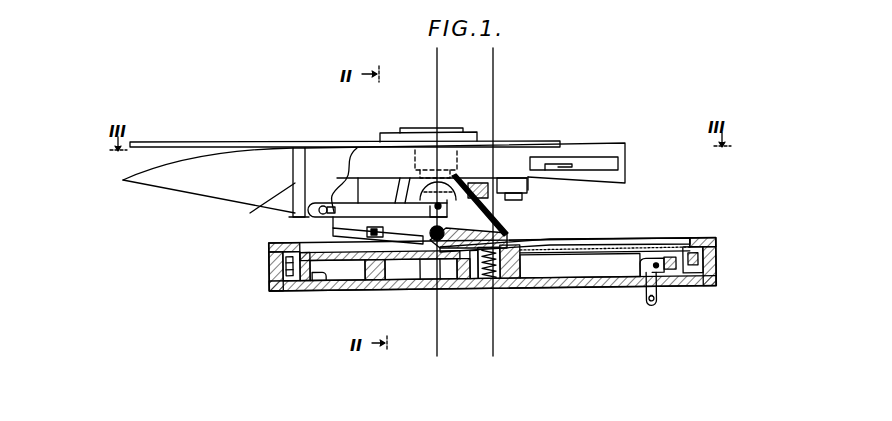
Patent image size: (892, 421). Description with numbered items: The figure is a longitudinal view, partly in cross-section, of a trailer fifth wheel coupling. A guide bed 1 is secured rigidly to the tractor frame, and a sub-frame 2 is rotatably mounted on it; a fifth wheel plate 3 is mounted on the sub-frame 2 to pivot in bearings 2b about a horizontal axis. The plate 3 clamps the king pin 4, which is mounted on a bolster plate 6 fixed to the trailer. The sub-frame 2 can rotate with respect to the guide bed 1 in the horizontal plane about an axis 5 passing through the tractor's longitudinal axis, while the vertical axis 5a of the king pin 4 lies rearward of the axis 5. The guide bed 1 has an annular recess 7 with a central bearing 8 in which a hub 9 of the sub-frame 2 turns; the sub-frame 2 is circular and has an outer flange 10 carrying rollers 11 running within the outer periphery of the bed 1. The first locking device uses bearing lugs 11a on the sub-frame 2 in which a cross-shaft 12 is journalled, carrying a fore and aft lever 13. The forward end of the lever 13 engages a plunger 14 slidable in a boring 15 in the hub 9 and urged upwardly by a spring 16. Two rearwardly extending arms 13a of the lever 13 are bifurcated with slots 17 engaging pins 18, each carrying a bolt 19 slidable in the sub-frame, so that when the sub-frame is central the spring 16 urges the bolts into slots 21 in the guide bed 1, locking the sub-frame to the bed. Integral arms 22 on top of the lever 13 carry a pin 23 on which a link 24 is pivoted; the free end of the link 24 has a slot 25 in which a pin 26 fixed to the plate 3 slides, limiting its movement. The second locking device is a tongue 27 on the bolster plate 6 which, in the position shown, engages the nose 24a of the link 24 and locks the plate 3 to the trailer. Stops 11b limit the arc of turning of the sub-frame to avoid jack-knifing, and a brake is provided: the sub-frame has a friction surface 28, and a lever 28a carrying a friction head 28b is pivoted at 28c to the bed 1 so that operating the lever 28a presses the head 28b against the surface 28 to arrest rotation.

The guide bed 1 is at (710, 288).
The sub-frame 2 is at (470, 178).
The bearings 2b is at (501, 233).
The fifth wheel plate 3 is at (180, 194).
The king pin 4 is at (440, 171).
The axis 5 is at (499, 350).
The vertical axis of the king pin 5a is at (443, 350).
The bolster plate 6 is at (205, 143).
The annular recess 7 is at (306, 289).
The central bearing 8 is at (527, 284).
The hub 9 is at (473, 288).
The outer flange 10 is at (316, 286).
The rollers 11 is at (698, 284).
The bearing lugs 11a is at (428, 288).
The stops 11b is at (701, 232).
The cross-shaft 12 is at (441, 263).
The fore and aft lever 13 is at (446, 232).
The rearwardly extending arms 13a is at (377, 211).
The plunger 14 is at (492, 289).
The boring 15 is at (540, 243).
The spring 16 is at (580, 267).
The slots 17 is at (368, 232).
The pins 18 is at (380, 236).
The bolt 19 is at (337, 272).
The slots 21 is at (402, 288).
The arms 22 is at (444, 211).
The pin 23 is at (462, 192).
The link 24 is at (363, 204).
The nose 24a is at (283, 194).
The slot 25 is at (322, 206).
The pin 26 is at (322, 230).
The tongue 27 is at (260, 204).
The friction surface 28 is at (666, 286).
The lever 28a is at (647, 306).
The friction head 28b is at (646, 243).
The pivot 28c is at (640, 282).